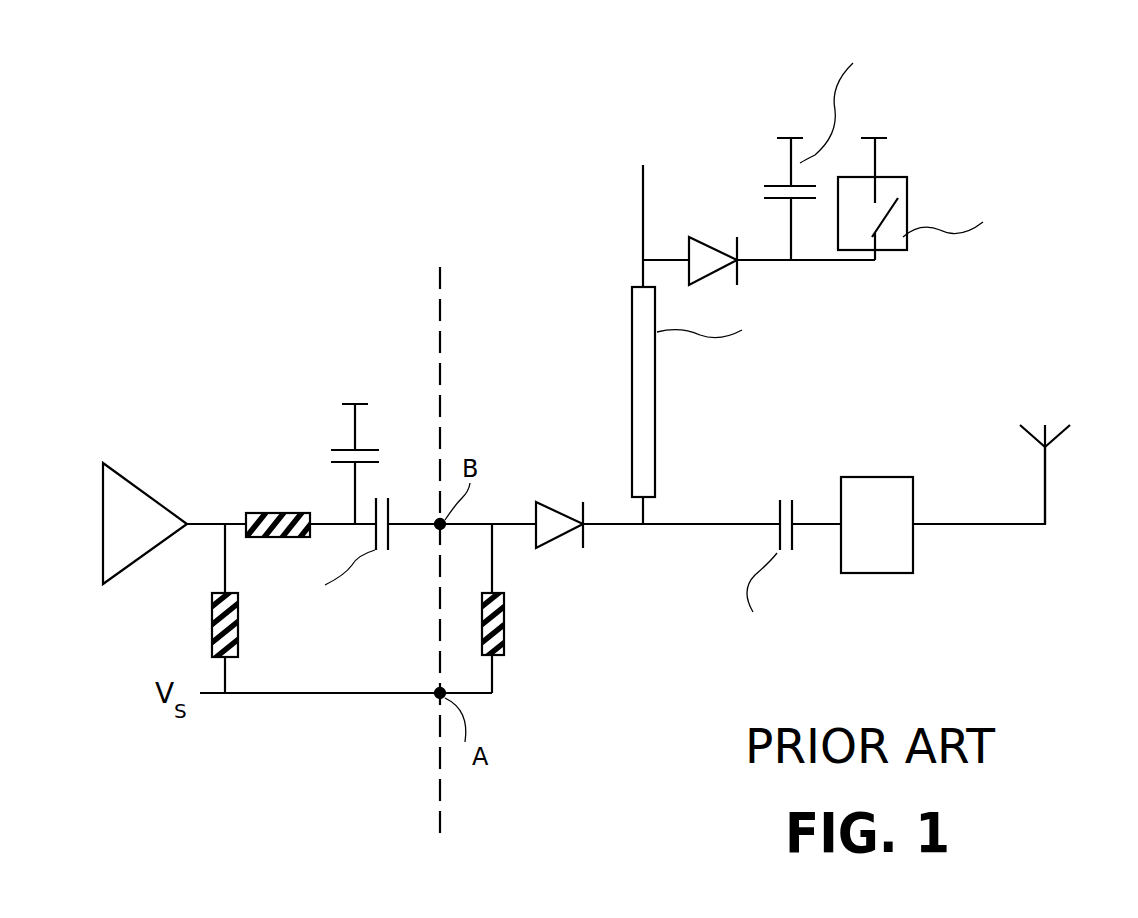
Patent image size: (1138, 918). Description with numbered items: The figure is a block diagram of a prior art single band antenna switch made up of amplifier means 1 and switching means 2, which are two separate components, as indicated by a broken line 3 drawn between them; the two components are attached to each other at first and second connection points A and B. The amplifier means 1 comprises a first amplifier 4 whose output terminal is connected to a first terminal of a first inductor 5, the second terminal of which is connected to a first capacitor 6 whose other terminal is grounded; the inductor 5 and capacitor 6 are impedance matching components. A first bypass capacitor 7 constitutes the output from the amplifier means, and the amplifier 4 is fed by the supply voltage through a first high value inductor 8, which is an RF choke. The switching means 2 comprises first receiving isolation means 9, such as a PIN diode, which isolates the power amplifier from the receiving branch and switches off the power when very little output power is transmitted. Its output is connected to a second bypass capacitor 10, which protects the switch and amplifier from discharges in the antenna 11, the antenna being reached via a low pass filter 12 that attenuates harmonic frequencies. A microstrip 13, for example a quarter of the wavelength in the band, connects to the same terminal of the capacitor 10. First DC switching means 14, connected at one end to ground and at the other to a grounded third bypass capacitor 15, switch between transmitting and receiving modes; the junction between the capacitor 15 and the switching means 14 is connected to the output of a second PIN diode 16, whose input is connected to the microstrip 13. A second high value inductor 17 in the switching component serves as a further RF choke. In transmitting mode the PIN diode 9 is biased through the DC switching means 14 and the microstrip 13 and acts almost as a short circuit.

The amplifier means 1 is at (207, 310).
The switching means 2 is at (576, 178).
The broken line 3 is at (443, 287).
The first amplifier 4 is at (135, 485).
The first inductor 5 is at (277, 510).
The first capacitor 6 is at (331, 420).
The first bypass capacitor 7 is at (386, 496).
The first high value inductor 8 is at (210, 627).
The first receiving isolation means 9 is at (548, 500).
The second bypass capacitor 10 is at (782, 497).
The antenna 11 is at (1045, 425).
The low pass filter 12 is at (875, 476).
The microstrip 13 is at (657, 386).
The first DC switching means 14 is at (907, 190).
The third bypass capacitor 15 is at (783, 186).
The second PIN diode 16 is at (707, 242).
The second high value inductor 17 is at (506, 625).